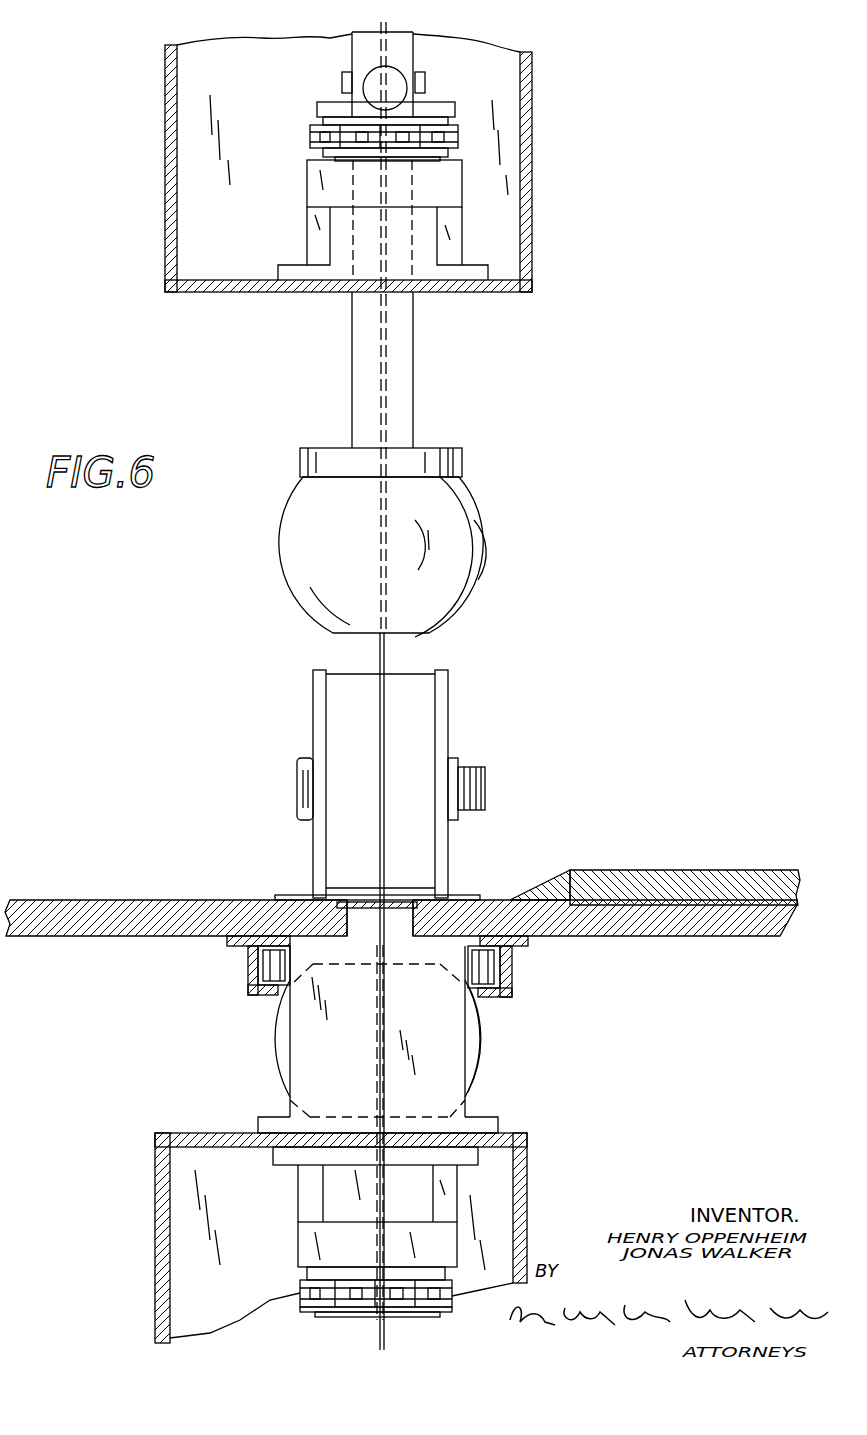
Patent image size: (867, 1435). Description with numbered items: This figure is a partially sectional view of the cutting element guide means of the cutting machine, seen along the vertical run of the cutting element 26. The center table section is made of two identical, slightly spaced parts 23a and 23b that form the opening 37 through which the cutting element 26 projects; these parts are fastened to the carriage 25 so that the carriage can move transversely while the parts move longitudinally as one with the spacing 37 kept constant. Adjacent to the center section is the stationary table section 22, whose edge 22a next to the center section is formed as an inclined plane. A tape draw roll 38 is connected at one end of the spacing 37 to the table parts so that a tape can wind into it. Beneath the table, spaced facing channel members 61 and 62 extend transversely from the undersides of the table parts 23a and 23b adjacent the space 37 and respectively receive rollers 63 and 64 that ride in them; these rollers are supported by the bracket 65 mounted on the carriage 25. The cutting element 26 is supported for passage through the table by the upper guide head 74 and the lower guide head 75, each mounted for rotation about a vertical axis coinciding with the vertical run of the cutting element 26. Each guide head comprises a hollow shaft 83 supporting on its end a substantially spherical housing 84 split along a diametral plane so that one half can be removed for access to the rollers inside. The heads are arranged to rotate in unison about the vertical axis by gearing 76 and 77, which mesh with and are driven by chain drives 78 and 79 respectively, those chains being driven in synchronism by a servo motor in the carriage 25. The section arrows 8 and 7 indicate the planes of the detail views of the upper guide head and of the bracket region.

The carriage 25 is at (533, 178).
The hollow shaft 83 is at (407, 377).
The gearing 76 is at (340, 102).
The chain drive 78 is at (320, 133).
The cutting element 26 is at (382, 340).
The section line 8- 8 is at (386, 412).
The upper guide head 74 is at (487, 557).
The spherical housing 84 is at (346, 538).
The tape draw roll 38 is at (313, 729).
The section line 7- 7 is at (384, 702).
The table part 23a is at (57, 923).
The table part 23b is at (672, 928).
The stationary table section 22 is at (685, 872).
The edge 22a is at (543, 878).
The opening 37 is at (406, 930).
The channel member 61 is at (248, 958).
The channel member 62 is at (512, 970).
The roller 63 is at (271, 970).
The roller 64 is at (490, 997).
The lower guide head 75 is at (484, 1050).
The bracket 65 is at (487, 1125).
The gearing 77 is at (307, 1227).
The chain drive 79 is at (300, 1292).